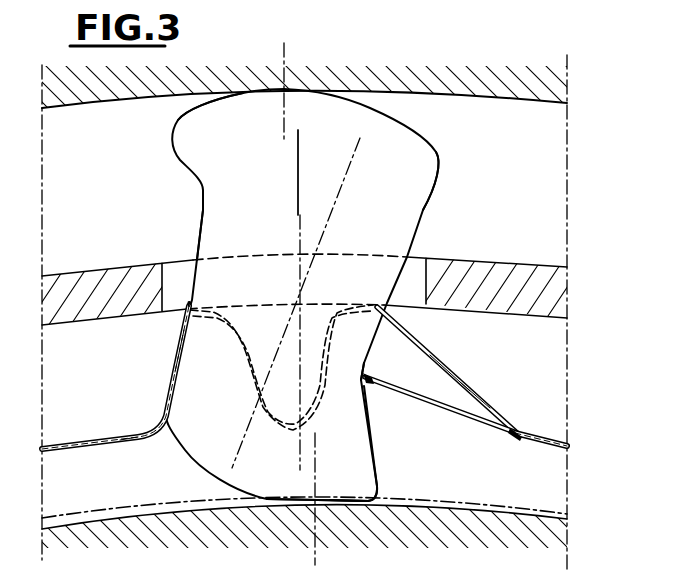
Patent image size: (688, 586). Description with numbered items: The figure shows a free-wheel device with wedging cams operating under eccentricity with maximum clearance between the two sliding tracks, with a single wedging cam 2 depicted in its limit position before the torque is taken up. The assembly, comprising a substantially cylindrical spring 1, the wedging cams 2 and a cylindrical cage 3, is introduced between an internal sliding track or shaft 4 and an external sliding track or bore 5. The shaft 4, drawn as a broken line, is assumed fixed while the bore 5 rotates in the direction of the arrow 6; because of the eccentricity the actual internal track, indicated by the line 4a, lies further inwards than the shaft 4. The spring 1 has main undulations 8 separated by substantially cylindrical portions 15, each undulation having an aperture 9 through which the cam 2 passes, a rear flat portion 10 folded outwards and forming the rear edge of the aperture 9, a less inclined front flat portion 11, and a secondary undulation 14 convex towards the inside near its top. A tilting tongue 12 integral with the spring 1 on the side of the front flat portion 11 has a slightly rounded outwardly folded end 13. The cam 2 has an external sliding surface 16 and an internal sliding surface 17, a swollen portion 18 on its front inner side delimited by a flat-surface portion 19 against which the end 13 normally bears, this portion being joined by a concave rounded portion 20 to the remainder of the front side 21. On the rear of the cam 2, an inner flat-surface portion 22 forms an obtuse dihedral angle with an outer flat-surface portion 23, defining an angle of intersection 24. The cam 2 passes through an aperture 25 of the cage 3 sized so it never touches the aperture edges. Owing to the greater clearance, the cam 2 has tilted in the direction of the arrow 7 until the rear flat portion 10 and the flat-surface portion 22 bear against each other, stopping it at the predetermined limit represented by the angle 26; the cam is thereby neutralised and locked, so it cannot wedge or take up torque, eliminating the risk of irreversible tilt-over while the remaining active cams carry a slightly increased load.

The spring 1 is at (118, 459).
The wedging cam 2 is at (198, 193).
The cylindrical cage 3 is at (112, 262).
The shaft 4 is at (437, 496).
The sliding track line 4a is at (469, 511).
The bore 5 is at (507, 100).
The arrow 6 is at (267, 52).
The arrow 7 is at (336, 125).
The main undulation 8 is at (478, 383).
The aperture 9 is at (402, 326).
The rear flat portion 10 is at (168, 378).
The front flat portion 11 is at (447, 363).
The tilting tongue 12 is at (459, 418).
The end of tilting tongue 13 is at (380, 381).
The secondary undulation 14 is at (290, 430).
The cylindrical portion 15 is at (546, 436).
The external sliding surface 16 is at (188, 119).
The internal sliding surface 17 is at (359, 506).
The swollen portion 18 is at (357, 483).
The flat-surface portion 19 is at (376, 434).
The concave rounded portion 20 is at (364, 367).
The front side 21 is at (437, 186).
The inner rear flat-surface portion 22 is at (180, 359).
The outer rear flat-surface portion 23 is at (199, 224).
The angle of intersection 24 is at (182, 303).
The cage aperture 25 is at (412, 270).
The angle 26 is at (337, 195).